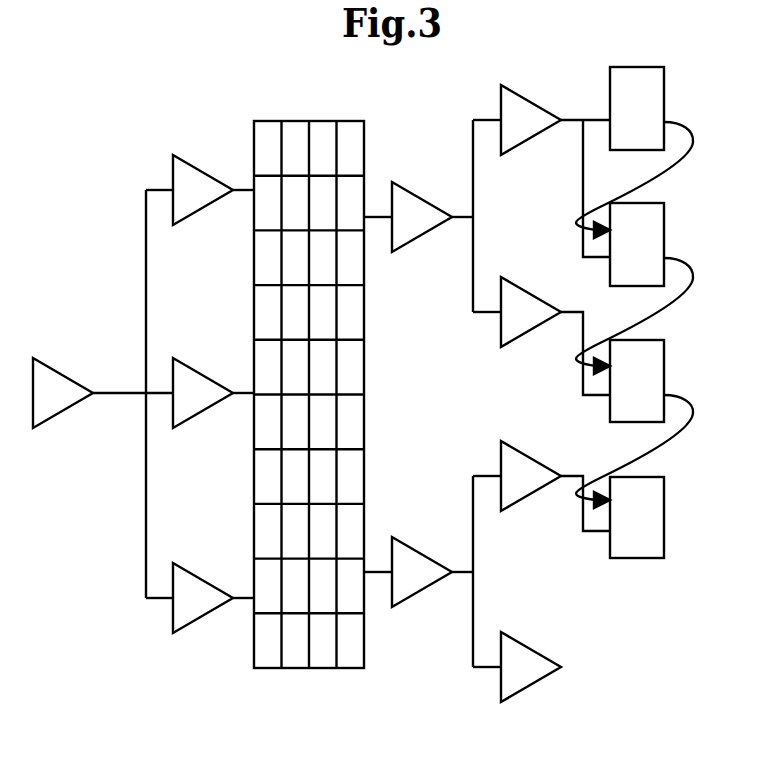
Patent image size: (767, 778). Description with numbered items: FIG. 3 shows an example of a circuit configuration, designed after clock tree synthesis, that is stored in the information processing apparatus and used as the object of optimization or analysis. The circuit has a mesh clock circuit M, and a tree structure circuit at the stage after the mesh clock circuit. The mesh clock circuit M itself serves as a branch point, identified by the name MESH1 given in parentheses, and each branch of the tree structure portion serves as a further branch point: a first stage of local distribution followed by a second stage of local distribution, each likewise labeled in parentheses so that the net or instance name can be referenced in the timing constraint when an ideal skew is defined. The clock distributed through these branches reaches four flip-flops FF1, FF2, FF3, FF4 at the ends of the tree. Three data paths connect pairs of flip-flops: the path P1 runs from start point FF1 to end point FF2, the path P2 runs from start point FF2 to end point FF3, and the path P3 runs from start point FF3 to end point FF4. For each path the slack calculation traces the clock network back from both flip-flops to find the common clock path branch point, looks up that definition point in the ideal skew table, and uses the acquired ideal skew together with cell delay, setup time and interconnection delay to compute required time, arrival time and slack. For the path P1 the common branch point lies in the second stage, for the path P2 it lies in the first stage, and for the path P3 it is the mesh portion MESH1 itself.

The mesh clock circuit M is at (327, 121).
The branch point of the mesh portion MESH1 is at (323, 414).
The flip-flop FF1 is at (637, 108).
The flip-flop FF2 is at (637, 244).
The flip-flop FF3 is at (637, 381).
The flip-flop FF4 is at (637, 517).
The path P1 is at (693, 142).
The path P2 is at (693, 278).
The path P3 is at (693, 413).